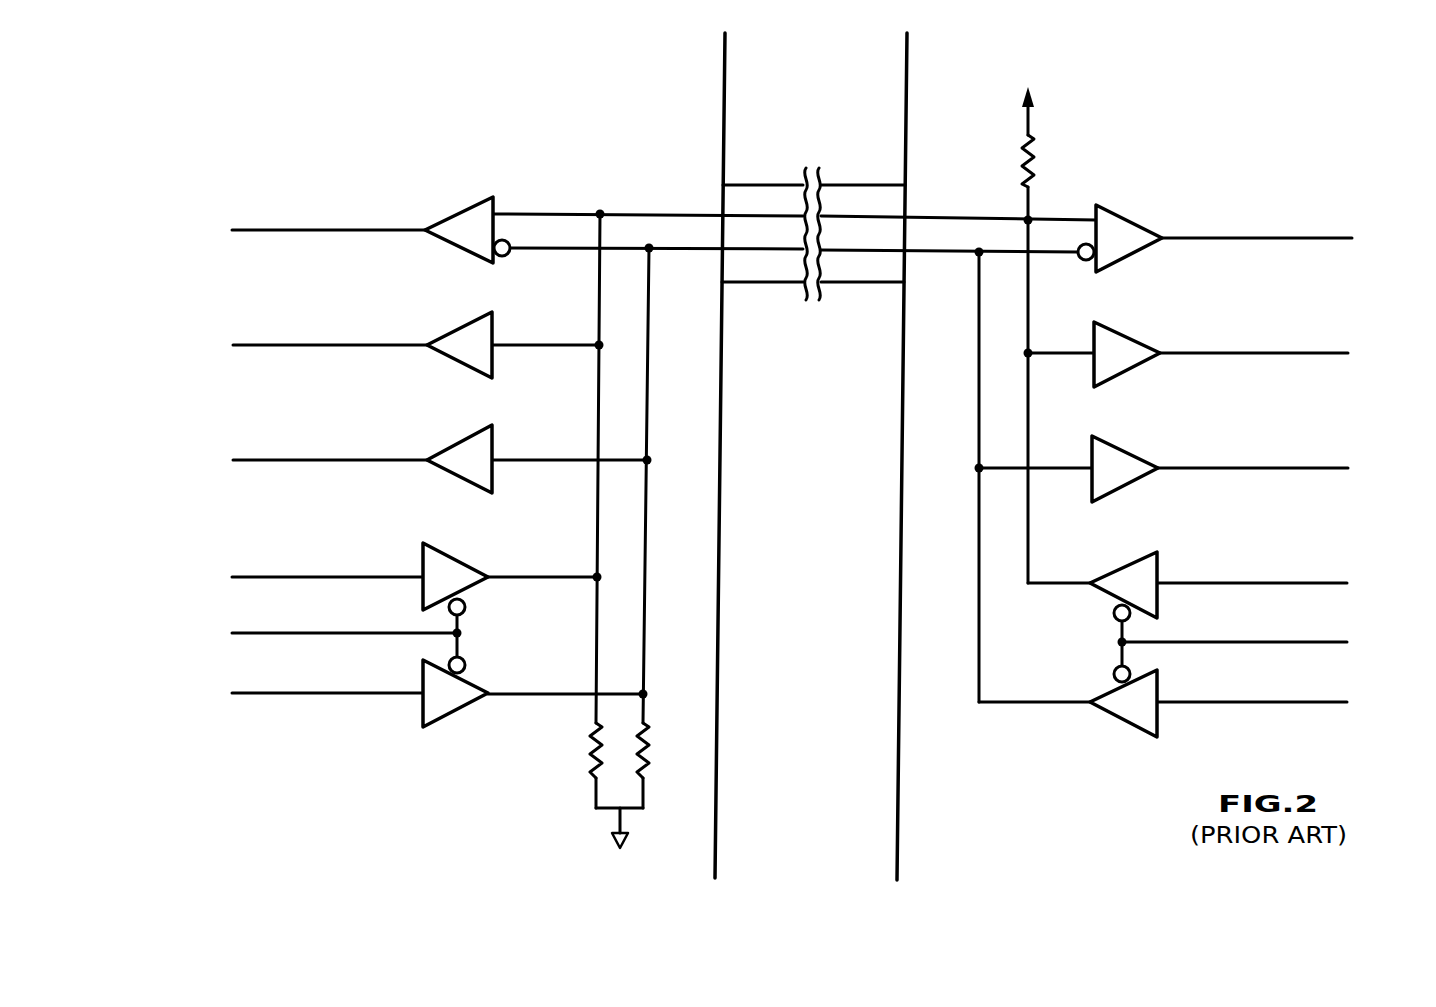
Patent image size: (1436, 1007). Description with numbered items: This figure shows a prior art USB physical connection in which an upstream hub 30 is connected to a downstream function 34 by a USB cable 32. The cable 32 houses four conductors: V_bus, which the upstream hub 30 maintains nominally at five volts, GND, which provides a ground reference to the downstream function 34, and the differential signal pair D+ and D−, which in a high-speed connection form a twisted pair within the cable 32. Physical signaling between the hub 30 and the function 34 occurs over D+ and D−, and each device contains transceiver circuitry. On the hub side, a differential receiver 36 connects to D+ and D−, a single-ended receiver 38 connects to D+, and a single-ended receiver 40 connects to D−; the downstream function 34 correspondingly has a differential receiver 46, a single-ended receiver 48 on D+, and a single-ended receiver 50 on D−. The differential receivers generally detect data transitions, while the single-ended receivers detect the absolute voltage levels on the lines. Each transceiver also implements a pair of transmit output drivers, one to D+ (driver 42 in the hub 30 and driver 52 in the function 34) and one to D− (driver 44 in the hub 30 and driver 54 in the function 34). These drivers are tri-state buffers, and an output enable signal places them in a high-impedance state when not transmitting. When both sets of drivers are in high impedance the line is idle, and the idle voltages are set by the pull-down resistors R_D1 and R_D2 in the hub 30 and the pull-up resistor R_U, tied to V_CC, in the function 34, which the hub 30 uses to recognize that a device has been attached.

The upstream hub 30 is at (347, 154).
The USB cable 32 is at (832, 126).
The downstream function 34 is at (1277, 165).
The differential receiver 36 is at (468, 210).
The single-ended receiver 38 is at (468, 324).
The single-ended receiver 40 is at (468, 439).
The transmit output driver 42 is at (455, 559).
The transmit output driver 44 is at (455, 711).
The differential receiver 46 is at (1132, 222).
The single-ended receiver 48 is at (1130, 338).
The single-ended receiver 50 is at (1128, 453).
The transmit output driver 52 is at (1120, 568).
The transmit output driver 54 is at (1118, 717).